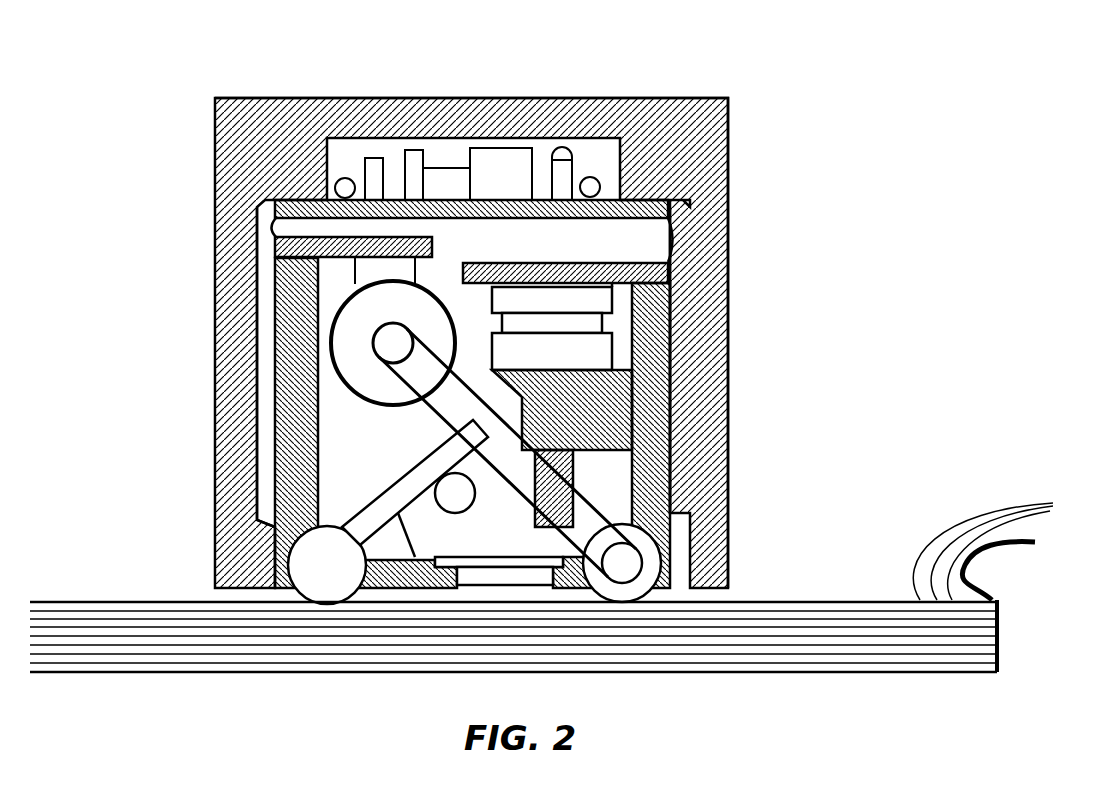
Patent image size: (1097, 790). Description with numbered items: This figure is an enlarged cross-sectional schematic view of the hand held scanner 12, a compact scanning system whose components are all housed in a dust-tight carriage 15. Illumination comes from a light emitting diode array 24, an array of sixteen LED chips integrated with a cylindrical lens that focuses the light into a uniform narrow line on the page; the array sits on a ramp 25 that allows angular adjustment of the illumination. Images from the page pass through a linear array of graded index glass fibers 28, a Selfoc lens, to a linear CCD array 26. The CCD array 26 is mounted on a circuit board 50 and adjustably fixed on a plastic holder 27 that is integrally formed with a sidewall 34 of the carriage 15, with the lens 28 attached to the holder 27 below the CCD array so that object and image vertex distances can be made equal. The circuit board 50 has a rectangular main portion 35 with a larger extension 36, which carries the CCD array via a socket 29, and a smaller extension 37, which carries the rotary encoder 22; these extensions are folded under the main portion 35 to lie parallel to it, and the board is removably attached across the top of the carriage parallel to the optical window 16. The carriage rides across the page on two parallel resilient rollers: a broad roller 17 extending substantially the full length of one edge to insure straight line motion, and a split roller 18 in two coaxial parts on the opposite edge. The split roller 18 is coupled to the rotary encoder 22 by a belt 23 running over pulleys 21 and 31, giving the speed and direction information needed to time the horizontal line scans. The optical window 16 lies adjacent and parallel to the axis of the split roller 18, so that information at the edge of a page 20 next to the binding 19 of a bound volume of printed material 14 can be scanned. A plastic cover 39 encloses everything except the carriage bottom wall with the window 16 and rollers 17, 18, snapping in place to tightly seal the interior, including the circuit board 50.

The hand held scanner 12 is at (603, 80).
The bound volume of printed material 14 is at (30, 600).
The carriage 15 is at (678, 394).
The optical window 16 is at (500, 557).
The broad roller 17 is at (333, 536).
The split roller 18 is at (612, 594).
The binding 19 is at (1003, 622).
The page 20 is at (866, 602).
The pulley 21 is at (375, 328).
The rotary encoder 22 is at (350, 397).
The belt 23 is at (430, 410).
The light emitting diode array 24 is at (425, 468).
The ramp 25 is at (396, 530).
The linear CCD array 26 is at (494, 357).
The plastic holder 27 is at (566, 386).
The linear array of graded index glass fibers 28 is at (567, 466).
The socket 29 is at (498, 296).
The pulley 31 is at (630, 580).
The sidewall 34 is at (663, 338).
The main portion 35 is at (498, 198).
The larger extension 36 is at (528, 262).
The smaller extension 37 is at (434, 247).
The cover 39 is at (375, 100).
The circuit board 50 is at (600, 217).